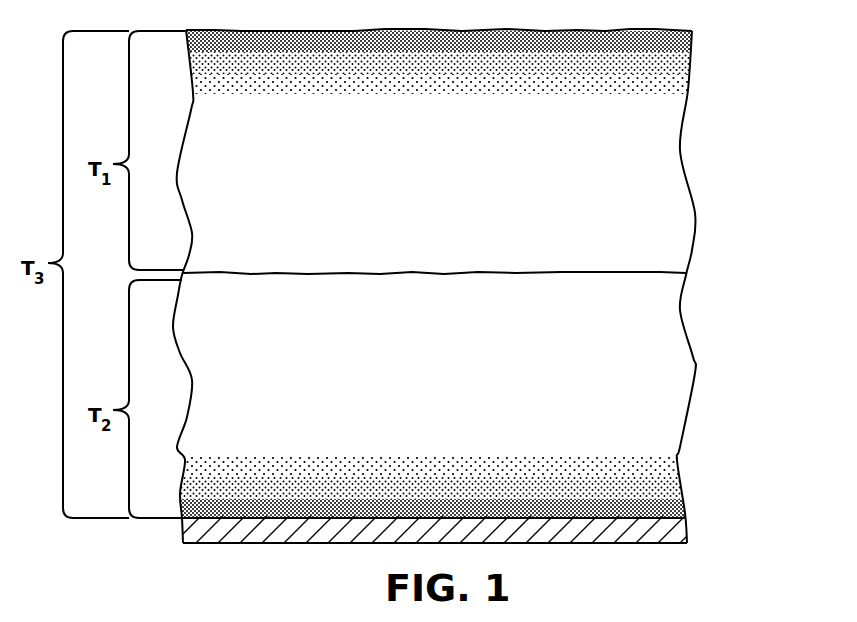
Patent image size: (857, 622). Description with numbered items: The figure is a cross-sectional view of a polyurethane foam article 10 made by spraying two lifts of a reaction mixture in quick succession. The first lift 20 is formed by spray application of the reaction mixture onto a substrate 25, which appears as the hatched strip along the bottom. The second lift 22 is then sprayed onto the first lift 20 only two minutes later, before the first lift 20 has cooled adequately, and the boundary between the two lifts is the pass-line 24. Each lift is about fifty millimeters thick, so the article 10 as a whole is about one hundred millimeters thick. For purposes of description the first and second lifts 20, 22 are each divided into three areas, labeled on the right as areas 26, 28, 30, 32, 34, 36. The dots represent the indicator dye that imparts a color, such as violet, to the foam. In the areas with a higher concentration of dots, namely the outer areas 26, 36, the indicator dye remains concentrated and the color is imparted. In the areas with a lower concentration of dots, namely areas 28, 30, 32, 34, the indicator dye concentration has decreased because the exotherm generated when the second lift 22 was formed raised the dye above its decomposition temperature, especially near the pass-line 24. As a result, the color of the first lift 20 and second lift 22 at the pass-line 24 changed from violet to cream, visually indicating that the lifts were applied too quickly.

The polyurethane foam article 10 is at (800, 97).
The first lift 20 is at (213, 406).
The second lift 22 is at (205, 147).
The pass-line 24 is at (209, 265).
The substrate 25 is at (680, 530).
The area 26 is at (695, 31).
The area 28 is at (695, 113).
The area 30 is at (695, 196).
The area 32 is at (695, 276).
The area 34 is at (695, 357).
The area 36 is at (695, 440).